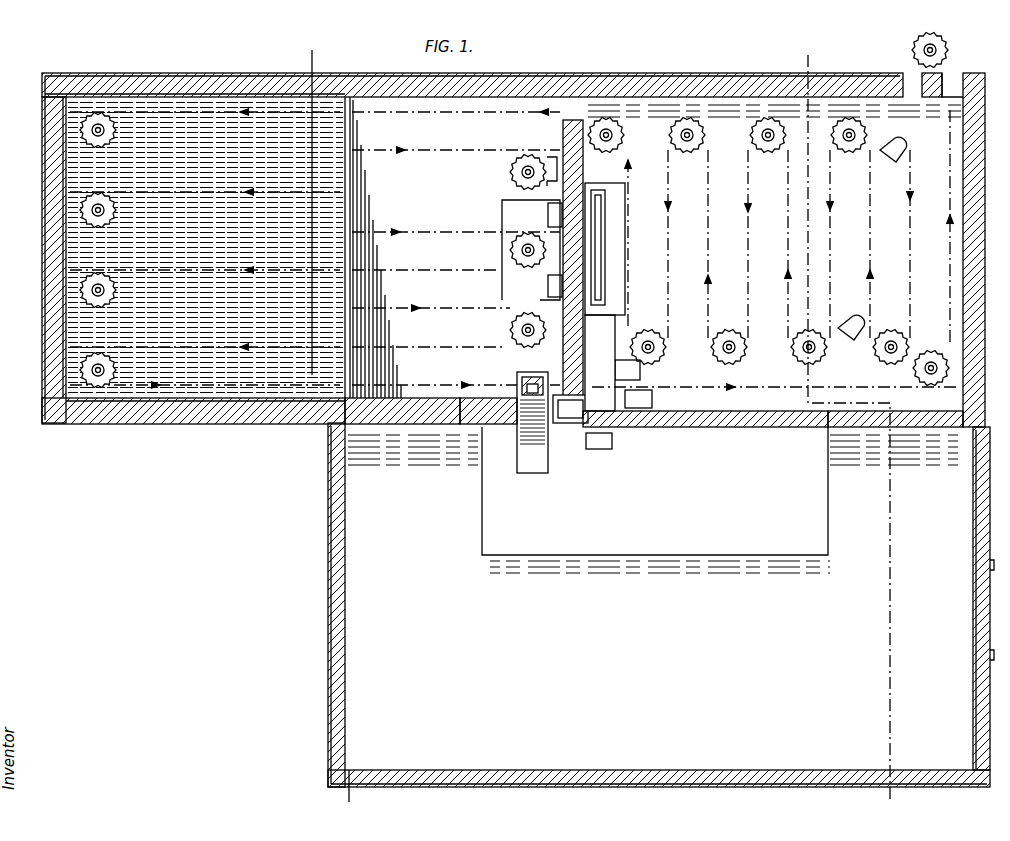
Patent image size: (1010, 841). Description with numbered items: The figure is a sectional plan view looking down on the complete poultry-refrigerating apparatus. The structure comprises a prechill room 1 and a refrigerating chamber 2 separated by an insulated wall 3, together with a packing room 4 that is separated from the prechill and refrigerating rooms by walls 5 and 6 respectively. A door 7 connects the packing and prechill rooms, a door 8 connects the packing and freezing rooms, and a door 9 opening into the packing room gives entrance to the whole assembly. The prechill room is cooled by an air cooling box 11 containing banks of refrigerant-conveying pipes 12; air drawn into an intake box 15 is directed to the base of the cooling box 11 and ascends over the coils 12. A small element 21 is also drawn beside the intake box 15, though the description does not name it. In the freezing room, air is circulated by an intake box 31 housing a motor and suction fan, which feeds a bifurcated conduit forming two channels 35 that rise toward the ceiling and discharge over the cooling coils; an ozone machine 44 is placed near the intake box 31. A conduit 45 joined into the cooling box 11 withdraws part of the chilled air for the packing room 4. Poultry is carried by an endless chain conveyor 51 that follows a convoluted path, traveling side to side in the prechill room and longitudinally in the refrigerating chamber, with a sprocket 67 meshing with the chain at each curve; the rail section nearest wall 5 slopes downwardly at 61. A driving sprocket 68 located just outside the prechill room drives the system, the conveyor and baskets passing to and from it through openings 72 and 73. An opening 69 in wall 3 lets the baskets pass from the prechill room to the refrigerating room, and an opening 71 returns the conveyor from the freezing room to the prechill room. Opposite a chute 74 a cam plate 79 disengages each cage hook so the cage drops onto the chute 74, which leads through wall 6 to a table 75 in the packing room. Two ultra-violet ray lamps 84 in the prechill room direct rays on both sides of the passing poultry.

The prechill room 1 is at (773, 245).
The refrigerating chamber 2 is at (1005, 412).
The insulated wall 3 is at (575, 172).
The packing room 4 is at (826, 58).
The wall 5 is at (785, 427).
The wall 6 is at (488, 426).
The door 7 is at (900, 432).
The door 8 is at (432, 426).
The door 9 is at (974, 605).
The air cooling box 11 is at (612, 200).
The refrigerant-conveying pipes 12 is at (602, 252).
The intake box 15 is at (620, 342).
The box 21 is at (650, 392).
The intake box 31 is at (508, 292).
The channels 35 is at (543, 249).
The ozone machine 44 is at (552, 157).
The conduit 45 is at (613, 442).
The conveyor 51 is at (452, 390).
The sloping rail section 61 is at (908, 348).
The sprocket 67 is at (84, 206).
The driving sprocket 68 is at (949, 58).
The opening 69 is at (562, 115).
The opening 71 is at (574, 428).
The opening 72 is at (955, 93).
The opening 73 is at (915, 98).
The chute 74 is at (540, 468).
The table 75 is at (590, 558).
The cam plate 79 is at (538, 376).
The ultra-violet ray lamps 84 is at (888, 158).